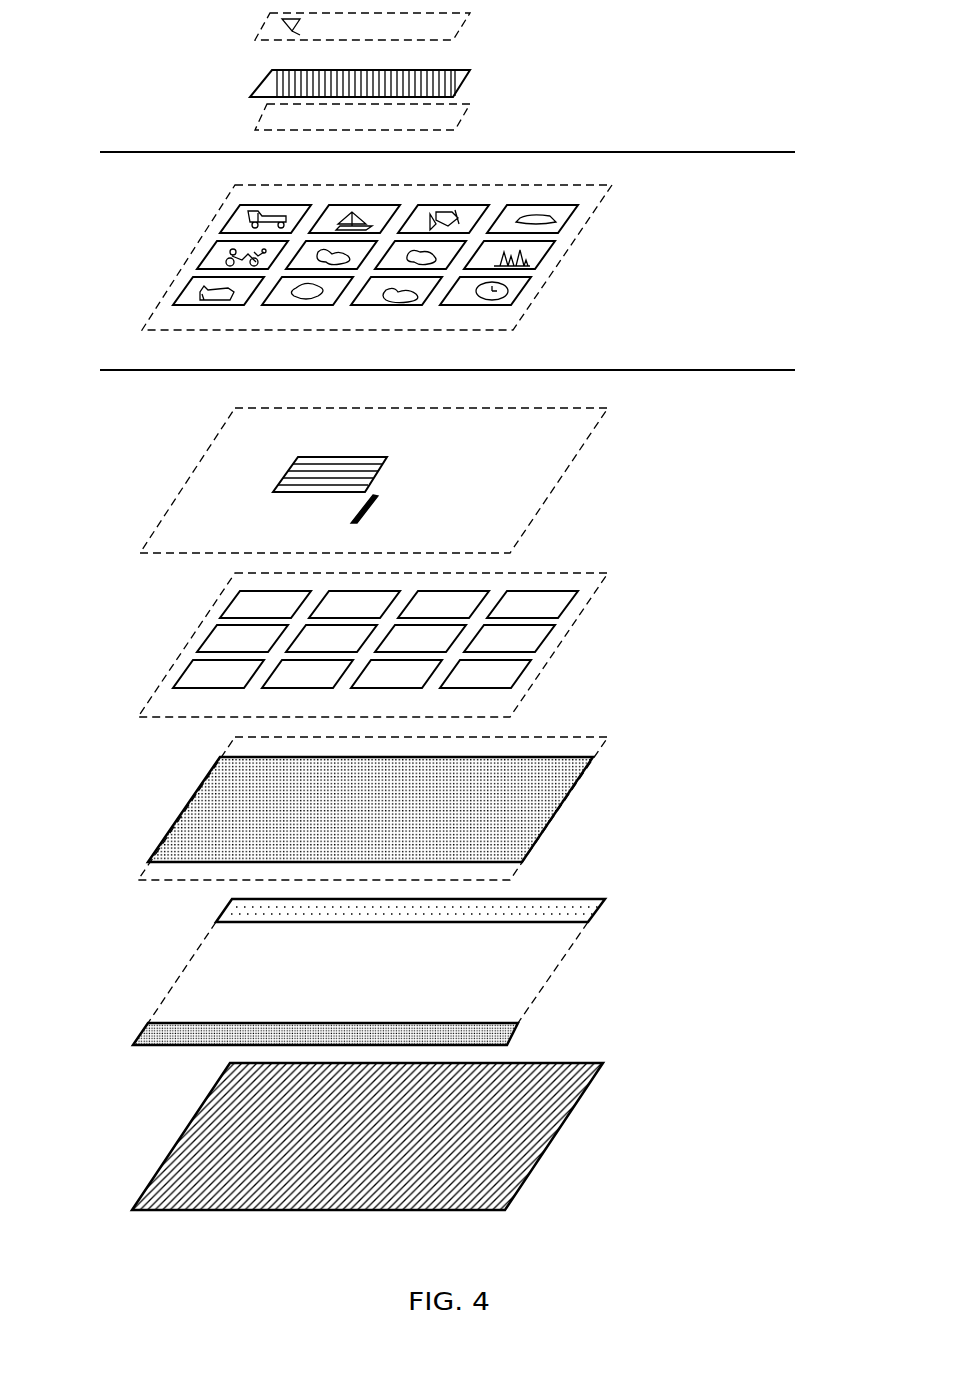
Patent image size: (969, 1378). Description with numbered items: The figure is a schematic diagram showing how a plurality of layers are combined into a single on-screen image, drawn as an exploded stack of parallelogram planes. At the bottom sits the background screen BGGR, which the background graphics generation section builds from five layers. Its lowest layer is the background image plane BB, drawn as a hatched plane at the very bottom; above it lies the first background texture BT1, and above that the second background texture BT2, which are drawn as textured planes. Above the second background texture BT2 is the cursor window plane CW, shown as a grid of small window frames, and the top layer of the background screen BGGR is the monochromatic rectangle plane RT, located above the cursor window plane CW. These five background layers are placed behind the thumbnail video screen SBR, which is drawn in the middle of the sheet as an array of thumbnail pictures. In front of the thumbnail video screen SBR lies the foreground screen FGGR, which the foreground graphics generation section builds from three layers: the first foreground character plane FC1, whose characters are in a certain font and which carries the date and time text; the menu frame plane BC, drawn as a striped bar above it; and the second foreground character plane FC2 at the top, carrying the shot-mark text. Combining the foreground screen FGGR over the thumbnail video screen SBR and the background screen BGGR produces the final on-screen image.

The foreground screen FGGR is at (248, 5).
The second foreground character plane FC2 is at (462, 22).
The menu frame plane BC is at (470, 78).
The first foreground character plane FC1 is at (462, 120).
The thumbnail video screen SBR is at (562, 268).
The background screen BGGR is at (128, 405).
The monochromatic rectangle plane RT is at (555, 485).
The cursor window plane CW is at (555, 650).
The second background texture BT2 is at (553, 813).
The first background texture BT1 is at (550, 980).
The background image plane BB is at (540, 1153).